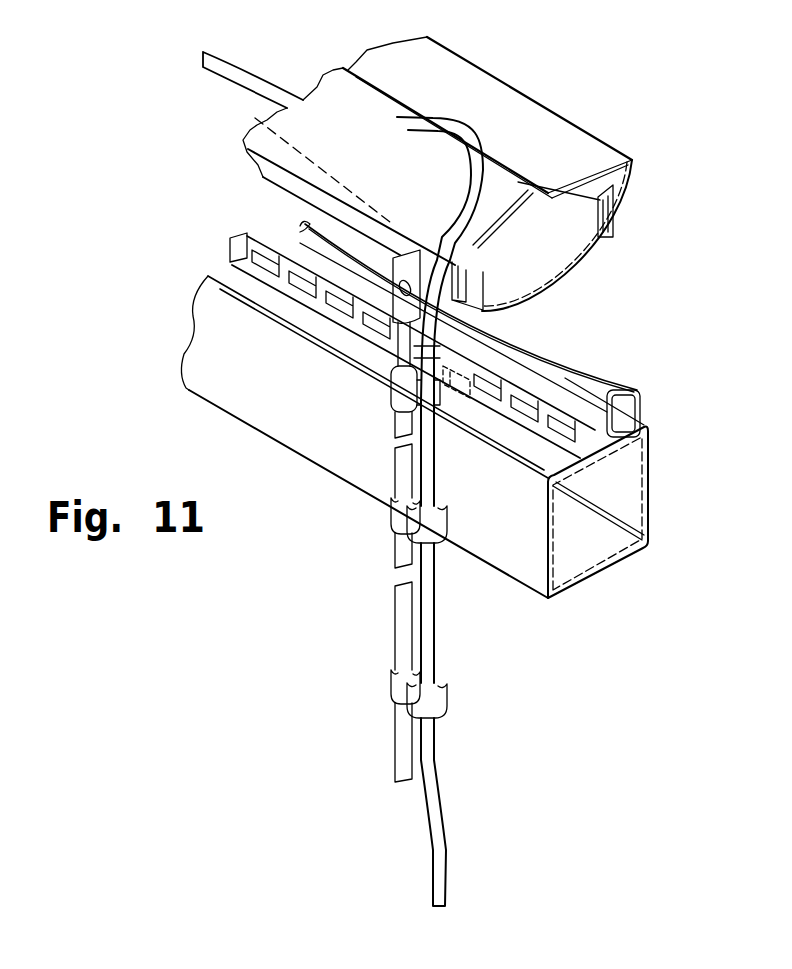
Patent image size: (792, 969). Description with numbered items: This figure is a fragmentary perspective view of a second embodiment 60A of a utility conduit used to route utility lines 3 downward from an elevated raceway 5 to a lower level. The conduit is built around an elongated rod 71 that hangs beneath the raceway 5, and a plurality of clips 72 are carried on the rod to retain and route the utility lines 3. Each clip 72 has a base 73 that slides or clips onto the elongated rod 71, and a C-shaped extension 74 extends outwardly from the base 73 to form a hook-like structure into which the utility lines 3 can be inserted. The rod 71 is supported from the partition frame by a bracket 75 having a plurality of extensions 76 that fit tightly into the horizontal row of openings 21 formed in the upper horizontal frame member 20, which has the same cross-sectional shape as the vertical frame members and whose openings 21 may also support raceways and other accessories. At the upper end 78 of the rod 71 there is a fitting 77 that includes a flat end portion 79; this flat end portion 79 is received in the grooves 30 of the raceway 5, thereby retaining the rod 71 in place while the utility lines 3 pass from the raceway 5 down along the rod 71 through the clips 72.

The utility lines 3 is at (240, 73).
The raceway 5 is at (482, 97).
The upper horizontal frame member 20 is at (648, 468).
The horizontal row of openings 21 is at (233, 237).
The grooves 30 is at (613, 207).
The second embodiment of the utility conduit 60A is at (380, 579).
The elongated rod 71 is at (395, 633).
The clips 72 is at (390, 512).
The base 73 is at (390, 525).
The C-shaped extension 74 is at (447, 538).
The bracket 75 is at (443, 387).
The extensions 76 is at (425, 352).
The fitting 77 is at (255, 118).
The upper end 78 is at (392, 320).
The flat end portion 79 is at (300, 230).